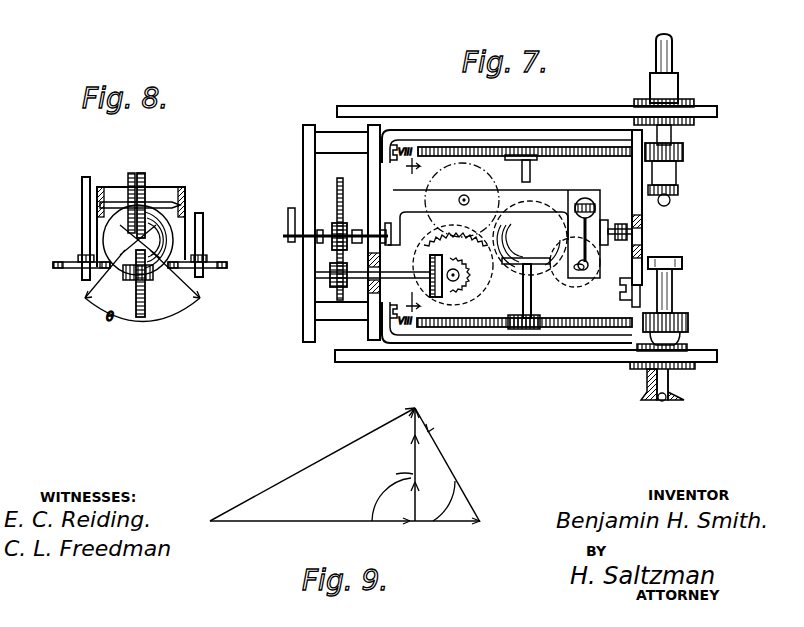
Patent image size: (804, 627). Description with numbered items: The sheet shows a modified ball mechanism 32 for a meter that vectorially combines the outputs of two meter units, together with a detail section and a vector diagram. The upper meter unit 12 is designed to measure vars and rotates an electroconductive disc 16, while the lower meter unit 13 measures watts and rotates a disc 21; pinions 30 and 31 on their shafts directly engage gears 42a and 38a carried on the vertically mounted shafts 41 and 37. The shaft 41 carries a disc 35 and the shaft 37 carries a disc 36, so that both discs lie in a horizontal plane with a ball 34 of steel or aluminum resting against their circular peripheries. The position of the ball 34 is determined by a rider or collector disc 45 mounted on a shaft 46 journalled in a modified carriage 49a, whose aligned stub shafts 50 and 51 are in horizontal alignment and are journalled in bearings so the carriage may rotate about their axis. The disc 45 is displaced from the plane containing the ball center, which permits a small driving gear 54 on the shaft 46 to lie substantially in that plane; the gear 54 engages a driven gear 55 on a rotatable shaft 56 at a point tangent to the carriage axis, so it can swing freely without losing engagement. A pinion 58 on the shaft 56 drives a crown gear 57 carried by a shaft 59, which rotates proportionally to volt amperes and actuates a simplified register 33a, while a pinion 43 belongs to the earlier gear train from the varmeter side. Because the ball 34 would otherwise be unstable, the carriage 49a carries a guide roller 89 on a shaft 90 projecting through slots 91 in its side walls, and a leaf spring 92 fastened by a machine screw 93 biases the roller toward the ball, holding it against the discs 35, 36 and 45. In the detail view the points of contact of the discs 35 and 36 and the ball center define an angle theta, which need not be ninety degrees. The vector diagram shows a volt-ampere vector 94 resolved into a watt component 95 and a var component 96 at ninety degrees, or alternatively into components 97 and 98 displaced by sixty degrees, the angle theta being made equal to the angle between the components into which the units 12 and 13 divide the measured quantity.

In FIG. 7, the upper meter unit 12 is at (712, 65).
In FIG. 7, the lower meter unit 13 is at (717, 401).
In FIG. 7, the electroconductive armature or disc 16 is at (360, 106).
In FIG. 7, the electroconductive armature or disc 21 is at (380, 364).
In FIG. 7, the pinion 30 is at (684, 152).
In FIG. 7, the pinion 31 is at (689, 321).
In FIG. 7, the ball mechanism 32 is at (515, 184).
In FIG. 8, the ball mechanism 32 is at (234, 211).
In FIG. 7, the simplified register 33a is at (303, 312).
In FIG. 7, the ball 34 is at (515, 275).
In FIG. 8, the ball 34 is at (110, 233).
In FIG. 8, the disc 35 is at (53, 265).
In FIG. 7, the disc 36 is at (527, 293).
In FIG. 8, the disc 36 is at (227, 265).
In FIG. 7, the shaft 37 is at (523, 295).
In FIG. 8, the shaft 37 is at (204, 244).
In FIG. 7, the gear 38a is at (597, 320).
In FIG. 7, the shaft 41 is at (535, 168).
In FIG. 8, the shaft 41 is at (82, 244).
In FIG. 7, the gear 42a is at (606, 156).
In FIG. 8, the pinion 43 is at (131, 176).
In FIG. 7, the rider or collector disc 45 is at (480, 176).
In FIG. 7, the shaft 46 is at (468, 197).
In FIG. 8, the shaft 46 is at (155, 200).
In FIG. 7, the modified carriage 49a is at (560, 193).
In FIG. 8, the modified carriage 49a is at (186, 190).
In FIG. 7, the stub shaft 50 is at (382, 230).
In FIG. 7, the stub shaft 51 is at (609, 229).
In FIG. 7, the driving gear 54 is at (428, 222).
In FIG. 8, the driving gear 54 is at (143, 176).
In FIG. 7, the driven gear 55 is at (426, 243).
In FIG. 8, the driven gear 55 is at (146, 300).
In FIG. 7, the rotatable shaft 56 is at (459, 275).
In FIG. 7, the crown gear 57 is at (430, 259).
In FIG. 7, the pinion 58 is at (452, 262).
In FIG. 7, the shaft 59 is at (412, 279).
In FIG. 7, the guide roller 89 is at (614, 289).
In FIG. 7, the shaft 90 is at (589, 266).
In FIG. 7, the slots 91 is at (580, 272).
In FIG. 7, the leaf spring 92 is at (623, 218).
In FIG. 7, the machine screw 93 is at (576, 202).
In FIG. 9, the vector 94 is at (322, 455).
In FIG. 9, the vector component 95 is at (322, 524).
In FIG. 9, the vector component 96 is at (413, 456).
In FIG. 9, the vector component 97 is at (460, 525).
In FIG. 9, the vector component 98 is at (448, 460).